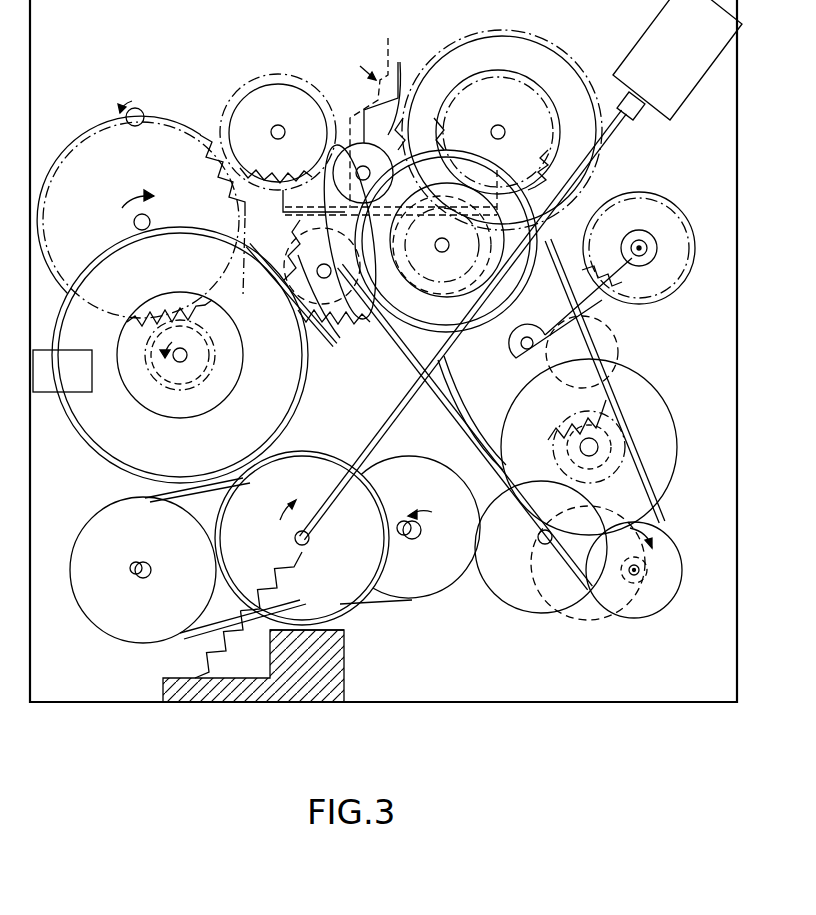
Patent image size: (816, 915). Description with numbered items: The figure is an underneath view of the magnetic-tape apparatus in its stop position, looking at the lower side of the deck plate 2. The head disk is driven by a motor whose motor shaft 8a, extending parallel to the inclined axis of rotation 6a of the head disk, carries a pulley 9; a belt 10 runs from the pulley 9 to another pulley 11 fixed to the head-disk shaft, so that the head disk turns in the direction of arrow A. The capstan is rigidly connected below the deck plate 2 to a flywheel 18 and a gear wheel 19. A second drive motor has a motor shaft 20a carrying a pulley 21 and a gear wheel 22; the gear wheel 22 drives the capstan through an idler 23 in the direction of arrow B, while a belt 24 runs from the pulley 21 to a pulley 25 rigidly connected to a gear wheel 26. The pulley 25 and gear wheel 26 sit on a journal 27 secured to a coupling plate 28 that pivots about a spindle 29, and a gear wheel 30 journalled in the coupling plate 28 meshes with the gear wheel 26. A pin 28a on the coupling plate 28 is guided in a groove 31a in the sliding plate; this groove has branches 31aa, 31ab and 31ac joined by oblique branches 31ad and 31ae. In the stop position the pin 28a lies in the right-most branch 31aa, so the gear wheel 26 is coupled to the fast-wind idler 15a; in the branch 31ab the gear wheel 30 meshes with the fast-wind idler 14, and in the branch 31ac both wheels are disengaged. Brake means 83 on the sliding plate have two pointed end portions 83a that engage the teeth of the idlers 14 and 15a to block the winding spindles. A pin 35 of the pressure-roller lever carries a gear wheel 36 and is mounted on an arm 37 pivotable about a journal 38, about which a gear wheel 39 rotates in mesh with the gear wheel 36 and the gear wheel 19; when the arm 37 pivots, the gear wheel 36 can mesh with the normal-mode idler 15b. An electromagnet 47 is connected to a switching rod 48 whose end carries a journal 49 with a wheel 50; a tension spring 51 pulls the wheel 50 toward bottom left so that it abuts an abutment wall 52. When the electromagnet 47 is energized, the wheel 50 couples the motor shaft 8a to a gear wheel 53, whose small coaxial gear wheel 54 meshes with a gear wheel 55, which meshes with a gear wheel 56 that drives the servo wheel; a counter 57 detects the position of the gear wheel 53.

The deck plate 2 is at (320, 676).
The abutment wall 52 is at (344, 642).
The belt 10 is at (196, 645).
The tension spring 51 is at (272, 562).
The pulley 9 is at (98, 618).
The motor shaft 8a is at (132, 574).
The wheel 50 is at (350, 598).
The journal 49 is at (310, 540).
The pulley 11 is at (444, 588).
The axis of rotation 6a is at (414, 540).
The idler 23 is at (499, 588).
The gear wheel 22 is at (606, 608).
The pulley 21 is at (668, 562).
The motor shaft 20a is at (645, 574).
The flywheel 18 is at (654, 410).
The gear wheel 19 is at (606, 464).
The gear wheel 53 is at (297, 412).
The coaxial gear wheel 54 is at (200, 355).
The gear wheel 55 is at (226, 278).
The gear wheel 56 is at (142, 111).
The counter 57 is at (50, 398).
The fast-wind idler 14 is at (250, 86).
The branch 31ab is at (338, 172).
The branch 31ac is at (388, 40).
The groove 31a is at (357, 62).
The spindle 29 is at (397, 85).
The coupling plate 28 is at (450, 137).
The oblique branch 31ae is at (360, 104).
The oblique branch 31ad is at (391, 207).
The branch 31aa is at (384, 250).
The gear wheel 30 is at (316, 326).
The pointed end portions 83a is at (530, 176).
The gear wheel 26 is at (482, 330).
The pulley 25 is at (380, 320).
The pin 28a is at (416, 282).
The brake means 83 is at (492, 264).
The journal 27 is at (450, 245).
The fast-wind idler 15a is at (556, 70).
The normal-mode idler 15b is at (494, 34).
The pin 35 is at (662, 238).
The gear wheel 36 is at (672, 268).
The arm 37 is at (632, 306).
The gear wheel 39 is at (612, 345).
The journal 38 is at (520, 355).
The switching rod 48 is at (606, 144).
The electromagnet 47 is at (700, 78).
The belt 24 is at (455, 425).